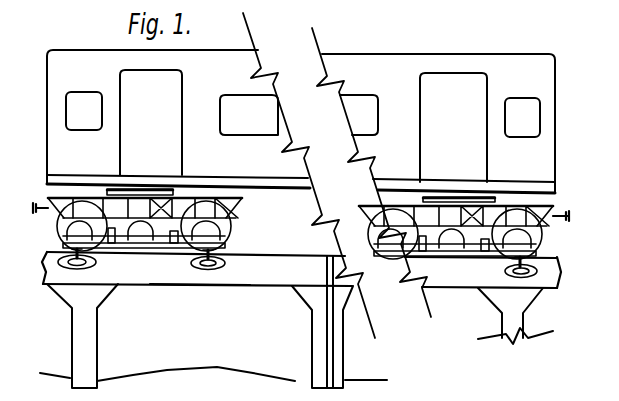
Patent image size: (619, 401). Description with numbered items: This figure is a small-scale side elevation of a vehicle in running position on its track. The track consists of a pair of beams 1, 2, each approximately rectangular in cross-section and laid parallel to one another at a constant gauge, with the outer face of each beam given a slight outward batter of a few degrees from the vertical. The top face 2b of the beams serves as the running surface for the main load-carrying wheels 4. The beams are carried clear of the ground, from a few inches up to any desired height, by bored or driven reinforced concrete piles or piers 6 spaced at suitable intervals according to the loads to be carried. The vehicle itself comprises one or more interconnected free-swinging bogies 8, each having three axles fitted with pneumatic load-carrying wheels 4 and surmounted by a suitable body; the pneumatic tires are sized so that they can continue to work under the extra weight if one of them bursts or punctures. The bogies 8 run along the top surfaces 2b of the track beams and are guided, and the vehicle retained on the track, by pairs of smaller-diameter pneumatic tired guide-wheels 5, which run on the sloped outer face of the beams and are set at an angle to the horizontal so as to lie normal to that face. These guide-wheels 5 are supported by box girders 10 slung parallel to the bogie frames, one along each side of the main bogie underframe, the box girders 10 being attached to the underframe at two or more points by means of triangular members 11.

The beam 1 is at (178, 277).
The beam 2 is at (208, 277).
The top face 2b is at (257, 262).
The load-carrying wheel 4 is at (57, 221).
The guide-wheel 5 is at (228, 265).
The pile or pier 6 is at (88, 334).
The bogie 8 is at (120, 196).
The box girder 10 is at (180, 213).
The triangular member 11 is at (201, 212).